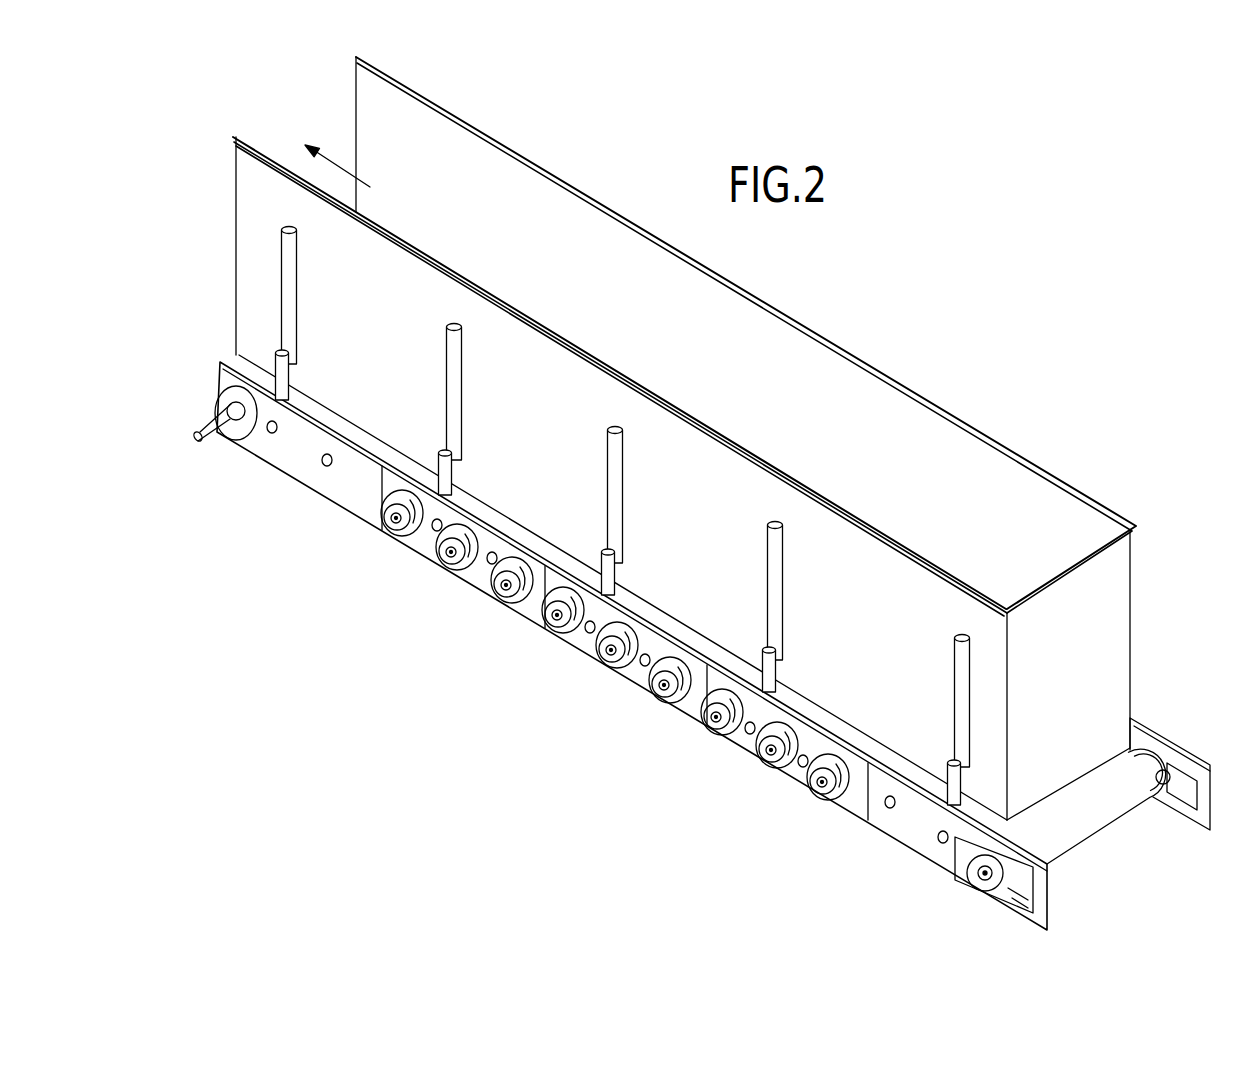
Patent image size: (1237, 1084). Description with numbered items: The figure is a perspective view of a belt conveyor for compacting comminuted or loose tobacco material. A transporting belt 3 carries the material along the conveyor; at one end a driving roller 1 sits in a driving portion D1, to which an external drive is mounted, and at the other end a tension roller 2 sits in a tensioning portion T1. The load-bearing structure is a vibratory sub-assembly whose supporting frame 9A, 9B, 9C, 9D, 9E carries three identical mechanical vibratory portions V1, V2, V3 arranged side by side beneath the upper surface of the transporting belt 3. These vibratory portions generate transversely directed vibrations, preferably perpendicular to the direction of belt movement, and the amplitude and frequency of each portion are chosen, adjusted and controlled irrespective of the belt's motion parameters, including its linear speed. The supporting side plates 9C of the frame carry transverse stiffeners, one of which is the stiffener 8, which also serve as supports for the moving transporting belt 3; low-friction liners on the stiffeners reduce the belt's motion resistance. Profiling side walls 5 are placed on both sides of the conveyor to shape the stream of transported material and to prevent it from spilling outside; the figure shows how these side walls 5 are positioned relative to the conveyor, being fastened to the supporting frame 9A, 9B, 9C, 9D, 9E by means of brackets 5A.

The driving roller 1 is at (208, 447).
The tension roller 2 is at (983, 873).
The transporting belt 3 is at (1107, 813).
The side walls 5 is at (1085, 497).
The brackets 5A is at (778, 563).
The transverse stiffener 8 is at (275, 437).
The supporting frame 9A is at (322, 473).
The supporting frame 9B is at (1200, 813).
The supporting side plates 9C is at (753, 742).
The supporting frame 9D is at (590, 653).
The supporting frame 9E is at (433, 547).
The driving portion D1 is at (357, 503).
The vibratory portion V1 is at (801, 778).
The vibratory portion V2 is at (642, 681).
The vibratory portion V3 is at (484, 584).
The tensioning portion T1 is at (896, 821).